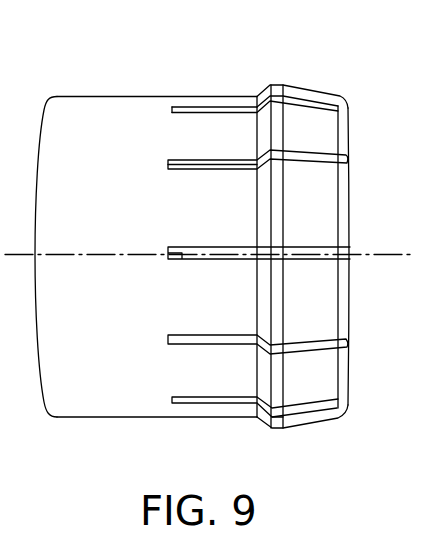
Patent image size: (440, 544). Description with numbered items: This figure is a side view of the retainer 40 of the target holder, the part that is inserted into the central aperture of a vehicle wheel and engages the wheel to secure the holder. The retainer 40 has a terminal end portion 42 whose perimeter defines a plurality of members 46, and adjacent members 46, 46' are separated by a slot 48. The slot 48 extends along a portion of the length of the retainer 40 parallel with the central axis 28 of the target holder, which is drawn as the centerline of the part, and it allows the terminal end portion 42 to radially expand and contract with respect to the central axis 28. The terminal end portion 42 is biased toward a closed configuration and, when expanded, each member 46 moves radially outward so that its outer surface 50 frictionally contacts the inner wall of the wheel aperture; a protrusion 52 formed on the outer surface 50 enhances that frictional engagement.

The retainer 40 is at (88, 54).
The terminal end portion 42 is at (342, 83).
The member 46 is at (284, 191).
The member 46' is at (290, 110).
The slot 48 is at (354, 170).
The central axis 28 is at (376, 258).
The outer surface 50 is at (301, 395).
The protrusion 52 is at (279, 379).